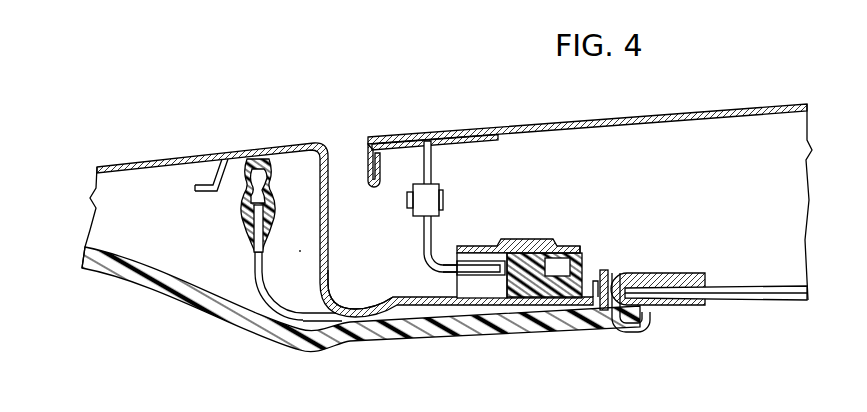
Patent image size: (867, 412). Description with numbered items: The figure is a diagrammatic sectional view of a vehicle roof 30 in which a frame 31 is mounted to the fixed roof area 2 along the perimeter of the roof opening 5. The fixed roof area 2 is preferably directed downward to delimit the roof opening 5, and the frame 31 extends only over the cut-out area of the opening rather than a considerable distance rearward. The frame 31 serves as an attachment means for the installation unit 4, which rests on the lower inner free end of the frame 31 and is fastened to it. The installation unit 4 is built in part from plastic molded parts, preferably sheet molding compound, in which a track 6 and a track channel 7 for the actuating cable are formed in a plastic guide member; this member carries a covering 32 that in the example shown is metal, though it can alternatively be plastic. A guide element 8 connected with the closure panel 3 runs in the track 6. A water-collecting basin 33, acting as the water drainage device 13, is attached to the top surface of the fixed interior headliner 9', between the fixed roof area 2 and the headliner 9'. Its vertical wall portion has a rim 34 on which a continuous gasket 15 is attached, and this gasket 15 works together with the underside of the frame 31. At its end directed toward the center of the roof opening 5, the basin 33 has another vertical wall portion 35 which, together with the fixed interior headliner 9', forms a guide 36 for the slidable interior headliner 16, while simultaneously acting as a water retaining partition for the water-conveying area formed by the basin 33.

The fixed roof area 2 is at (188, 148).
The closure panel 3 is at (738, 108).
The installation unit 4 is at (602, 226).
The roof opening 5 is at (350, 150).
The track 6 is at (483, 283).
The track channel 7 is at (553, 272).
The guide element 8 is at (428, 244).
The fixed interior headliner 9' is at (361, 312).
The water drainage device 13 is at (300, 248).
The continuous gasket 15 is at (256, 163).
The slidable interior headliner 16 is at (738, 302).
The vehicle roof 30 is at (455, 96).
The frame 31 is at (339, 320).
The covering 32 is at (529, 242).
The water-collecting basin 33 is at (293, 326).
The rim 34 is at (264, 262).
The vertical wall portion 35 is at (600, 292).
The guide 36 is at (633, 310).